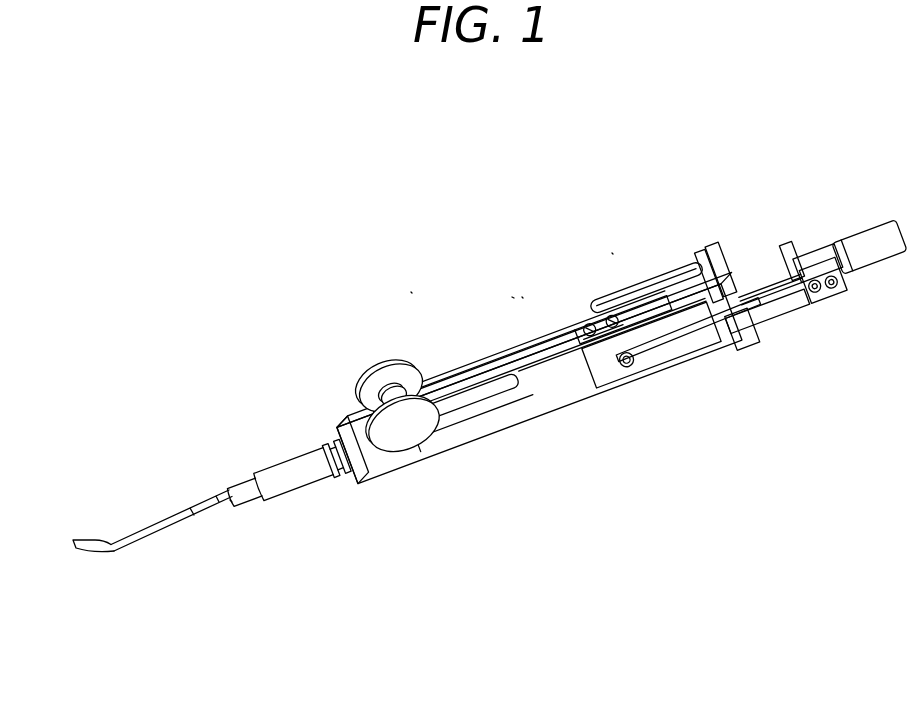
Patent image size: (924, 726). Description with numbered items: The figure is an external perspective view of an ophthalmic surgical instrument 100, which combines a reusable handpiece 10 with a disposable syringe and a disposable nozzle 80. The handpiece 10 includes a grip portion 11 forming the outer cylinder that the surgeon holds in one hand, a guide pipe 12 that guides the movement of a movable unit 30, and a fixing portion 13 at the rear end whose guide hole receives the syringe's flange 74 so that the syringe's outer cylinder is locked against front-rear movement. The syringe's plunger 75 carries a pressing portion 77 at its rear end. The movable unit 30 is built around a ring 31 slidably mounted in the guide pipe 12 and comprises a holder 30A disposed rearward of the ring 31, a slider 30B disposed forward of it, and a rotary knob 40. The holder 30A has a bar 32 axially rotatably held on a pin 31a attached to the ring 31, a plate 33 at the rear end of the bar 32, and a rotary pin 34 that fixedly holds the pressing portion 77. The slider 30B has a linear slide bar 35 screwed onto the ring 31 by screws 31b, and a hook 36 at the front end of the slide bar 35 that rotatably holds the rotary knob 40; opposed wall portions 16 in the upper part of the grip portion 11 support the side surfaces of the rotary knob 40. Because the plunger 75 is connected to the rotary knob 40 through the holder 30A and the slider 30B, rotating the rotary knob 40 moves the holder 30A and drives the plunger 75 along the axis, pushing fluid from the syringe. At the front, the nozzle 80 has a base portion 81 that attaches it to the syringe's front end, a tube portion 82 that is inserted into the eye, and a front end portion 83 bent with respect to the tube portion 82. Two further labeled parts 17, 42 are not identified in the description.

The ophthalmic surgical instrument 100 is at (352, 234).
The handpiece 10 is at (522, 297).
The grip portion 11 is at (545, 393).
The guide pipe 12 is at (658, 318).
The fixing portion 13 is at (723, 253).
The wall portions 16 is at (490, 398).
The recess 17 is at (449, 420).
The movable unit 30 is at (563, 143).
The holder 30A is at (612, 253).
The slider 30B is at (410, 292).
The ring 31 is at (610, 378).
The pin 31a is at (632, 371).
The screws 31b is at (604, 316).
The bar 32 is at (777, 310).
The plate 33 is at (810, 305).
The rotary pin 34 is at (855, 265).
The slide bar 35 is at (487, 368).
The hook 36 is at (347, 370).
The rotary knob 40 is at (351, 361).
The wheel ring 42 is at (383, 363).
The flange 74 is at (700, 257).
The plunger 75 is at (768, 280).
The pressing portion 77 is at (803, 258).
The nozzle 80 is at (143, 433).
The base portion 81 is at (272, 496).
The tube portion 82 is at (113, 553).
The front end portion 83 is at (75, 545).